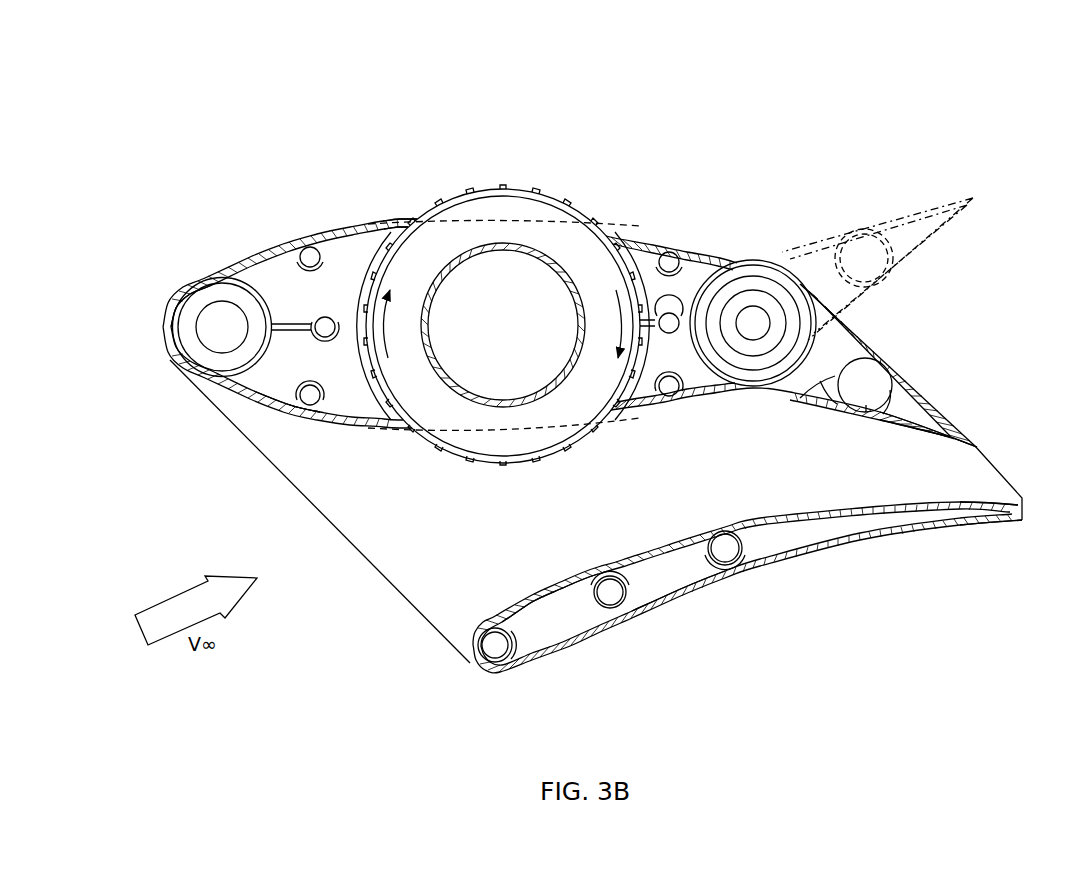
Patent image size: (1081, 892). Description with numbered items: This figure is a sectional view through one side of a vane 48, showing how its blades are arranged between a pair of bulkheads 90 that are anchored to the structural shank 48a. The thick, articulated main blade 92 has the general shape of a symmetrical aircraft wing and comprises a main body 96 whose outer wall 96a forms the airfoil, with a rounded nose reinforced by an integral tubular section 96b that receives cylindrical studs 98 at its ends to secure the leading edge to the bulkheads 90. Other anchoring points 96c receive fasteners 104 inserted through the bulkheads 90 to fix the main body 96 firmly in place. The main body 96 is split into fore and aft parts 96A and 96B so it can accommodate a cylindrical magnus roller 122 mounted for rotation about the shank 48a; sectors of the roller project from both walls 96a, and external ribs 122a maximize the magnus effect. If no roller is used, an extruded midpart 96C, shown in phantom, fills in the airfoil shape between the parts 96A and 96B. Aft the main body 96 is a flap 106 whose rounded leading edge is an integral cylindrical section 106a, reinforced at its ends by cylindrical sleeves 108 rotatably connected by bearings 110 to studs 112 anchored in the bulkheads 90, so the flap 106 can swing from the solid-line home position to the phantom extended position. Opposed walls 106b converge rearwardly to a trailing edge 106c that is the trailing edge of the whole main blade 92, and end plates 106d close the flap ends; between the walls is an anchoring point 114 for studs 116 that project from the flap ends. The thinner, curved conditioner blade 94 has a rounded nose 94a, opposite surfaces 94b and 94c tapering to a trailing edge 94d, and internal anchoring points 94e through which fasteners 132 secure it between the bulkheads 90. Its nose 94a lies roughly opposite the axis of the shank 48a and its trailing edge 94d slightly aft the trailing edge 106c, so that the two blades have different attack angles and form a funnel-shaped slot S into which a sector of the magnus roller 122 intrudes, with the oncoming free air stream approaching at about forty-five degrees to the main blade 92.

The vane 48 is at (148, 96).
The shank 48a is at (537, 268).
The bulkhead 90 is at (337, 528).
The main blade 92 is at (304, 430).
The conditioner blade 94 is at (453, 655).
The nose 94a is at (473, 663).
The surface 94b is at (538, 588).
The surface 94c is at (658, 600).
The trailing edge 94d is at (998, 509).
The anchoring point 94e is at (702, 542).
The main body 96 is at (214, 392).
The outer wall 96a is at (342, 226).
The tubular section 96b is at (204, 280).
The anchoring point 96c is at (322, 249).
The fore part 96A is at (359, 437).
The aft part 96B is at (667, 426).
The blade body midpart 96C is at (528, 430).
The cylindrical stud 98 is at (185, 310).
The fastener 104 is at (324, 316).
The flap 106 is at (884, 303).
The cylindrical section 106a is at (820, 252).
The wall 106b is at (928, 398).
The trailing edge 106c is at (977, 447).
The end plate 106d is at (924, 417).
The cylindrical sleeve 108 is at (780, 278).
The bearing 110 is at (757, 299).
The stud 112 is at (750, 312).
The anchoring point 114 is at (832, 378).
The stud 116 is at (866, 405).
The magnus roller 122 is at (457, 476).
The external rib 122a is at (503, 189).
The fastener 132 is at (613, 598).
The slot S is at (394, 588).